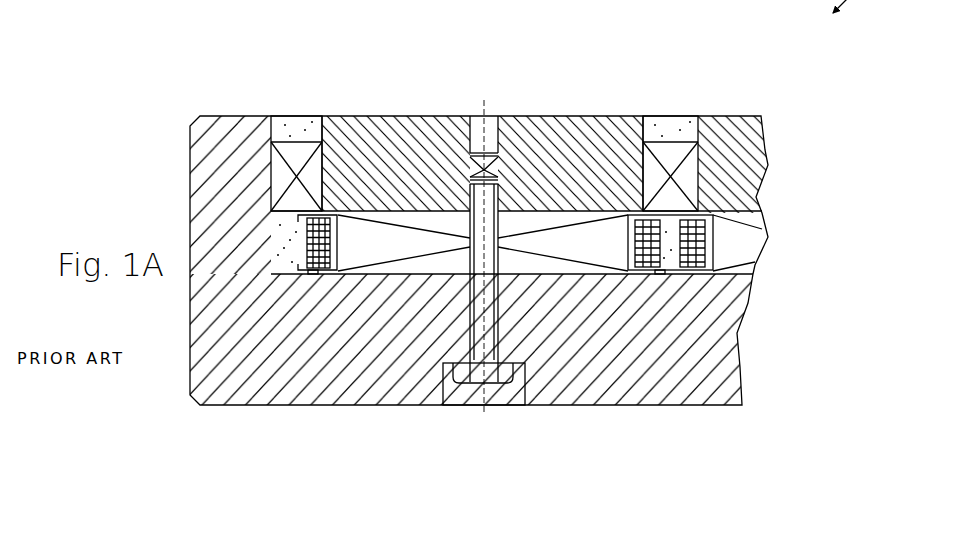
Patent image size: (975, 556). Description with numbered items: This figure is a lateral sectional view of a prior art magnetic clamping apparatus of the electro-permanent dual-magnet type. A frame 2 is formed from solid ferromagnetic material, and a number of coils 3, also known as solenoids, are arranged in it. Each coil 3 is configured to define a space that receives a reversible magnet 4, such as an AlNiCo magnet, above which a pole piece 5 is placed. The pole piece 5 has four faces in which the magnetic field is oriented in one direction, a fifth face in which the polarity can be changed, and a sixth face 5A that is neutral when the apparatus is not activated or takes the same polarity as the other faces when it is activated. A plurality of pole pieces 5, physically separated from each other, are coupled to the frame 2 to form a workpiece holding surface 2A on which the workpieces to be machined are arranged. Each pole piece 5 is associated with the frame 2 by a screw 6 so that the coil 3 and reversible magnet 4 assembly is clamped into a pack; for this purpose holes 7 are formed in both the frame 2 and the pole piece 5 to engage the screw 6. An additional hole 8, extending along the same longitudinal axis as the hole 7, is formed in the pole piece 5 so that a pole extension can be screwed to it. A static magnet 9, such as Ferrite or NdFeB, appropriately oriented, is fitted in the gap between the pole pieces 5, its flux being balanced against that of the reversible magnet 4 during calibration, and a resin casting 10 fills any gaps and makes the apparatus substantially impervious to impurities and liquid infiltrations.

The frame 2 is at (239, 375).
The workpiece holding surface 2A is at (802, 71).
The coil 3 is at (313, 274).
The reversible magnet 4 is at (382, 251).
The pole piece 5 is at (562, 148).
The sixth face 5A is at (383, 116).
The screw 6 is at (461, 373).
The hole 7 is at (515, 388).
The additional hole 8 is at (485, 108).
The static magnet 9 is at (279, 186).
The resin casting 10 is at (297, 128).